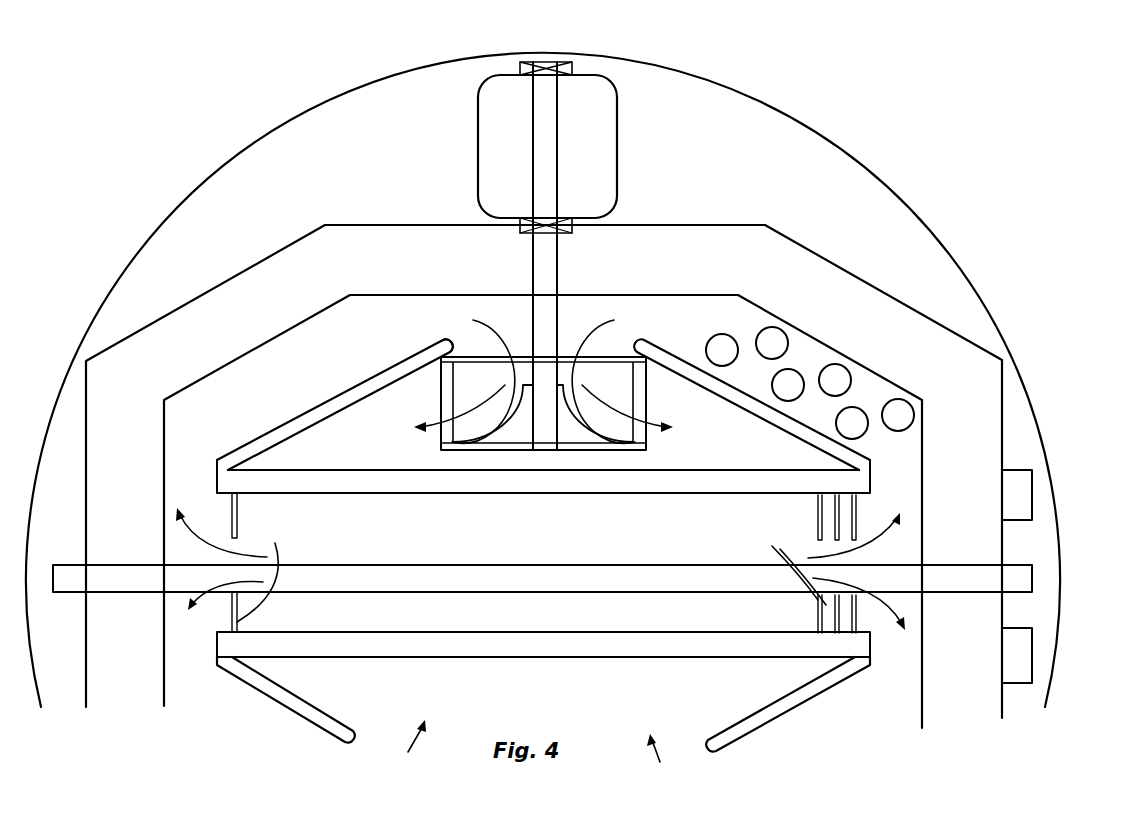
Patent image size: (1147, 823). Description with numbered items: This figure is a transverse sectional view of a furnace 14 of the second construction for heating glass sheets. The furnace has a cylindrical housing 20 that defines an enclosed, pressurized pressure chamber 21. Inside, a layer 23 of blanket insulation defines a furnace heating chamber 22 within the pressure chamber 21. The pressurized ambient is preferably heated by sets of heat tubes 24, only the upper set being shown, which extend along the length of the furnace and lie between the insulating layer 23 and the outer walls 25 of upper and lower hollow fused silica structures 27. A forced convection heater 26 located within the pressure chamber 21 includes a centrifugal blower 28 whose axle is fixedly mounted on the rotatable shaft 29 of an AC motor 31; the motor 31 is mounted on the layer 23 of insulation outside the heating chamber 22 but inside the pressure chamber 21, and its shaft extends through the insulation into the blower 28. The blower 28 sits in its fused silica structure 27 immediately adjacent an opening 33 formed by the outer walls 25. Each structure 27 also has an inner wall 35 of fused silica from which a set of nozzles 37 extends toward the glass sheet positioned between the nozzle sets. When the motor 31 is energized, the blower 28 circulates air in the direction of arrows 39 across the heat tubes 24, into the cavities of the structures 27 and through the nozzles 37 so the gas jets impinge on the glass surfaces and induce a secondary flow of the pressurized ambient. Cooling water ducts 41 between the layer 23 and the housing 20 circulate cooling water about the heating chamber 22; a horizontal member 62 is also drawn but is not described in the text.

The furnace 14 is at (808, 122).
The cylindrical housing 20 is at (868, 169).
The pressure chamber 21 is at (716, 86).
The furnace heating chamber 22 is at (699, 290).
The layer of blanket insulation 23 is at (645, 225).
The heat tubes 24 is at (790, 370).
The outer walls 25 is at (302, 430).
The forced convection heater 26 is at (465, 152).
The hollow fused silica structure 27 is at (335, 391).
The centrifugal blower 28 is at (526, 357).
The rotatable shaft 29 is at (560, 262).
The AC motor 31 is at (620, 136).
The opening 33 is at (462, 350).
The inner wall 35 is at (652, 470).
The nozzles 37 is at (240, 530).
The arrows 39 is at (482, 420).
The cooling water ducts 41 is at (1032, 502).
The support bar 62 is at (508, 597).